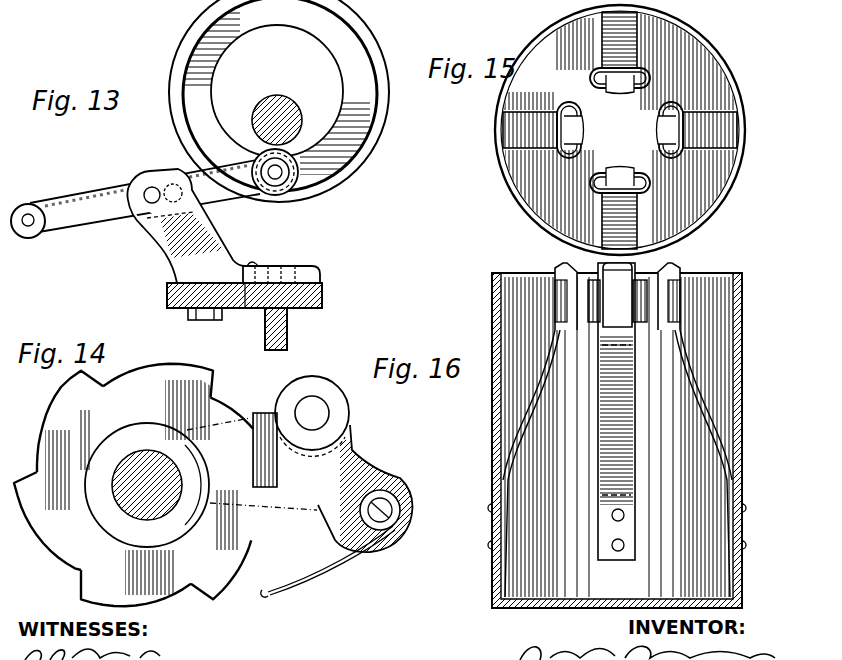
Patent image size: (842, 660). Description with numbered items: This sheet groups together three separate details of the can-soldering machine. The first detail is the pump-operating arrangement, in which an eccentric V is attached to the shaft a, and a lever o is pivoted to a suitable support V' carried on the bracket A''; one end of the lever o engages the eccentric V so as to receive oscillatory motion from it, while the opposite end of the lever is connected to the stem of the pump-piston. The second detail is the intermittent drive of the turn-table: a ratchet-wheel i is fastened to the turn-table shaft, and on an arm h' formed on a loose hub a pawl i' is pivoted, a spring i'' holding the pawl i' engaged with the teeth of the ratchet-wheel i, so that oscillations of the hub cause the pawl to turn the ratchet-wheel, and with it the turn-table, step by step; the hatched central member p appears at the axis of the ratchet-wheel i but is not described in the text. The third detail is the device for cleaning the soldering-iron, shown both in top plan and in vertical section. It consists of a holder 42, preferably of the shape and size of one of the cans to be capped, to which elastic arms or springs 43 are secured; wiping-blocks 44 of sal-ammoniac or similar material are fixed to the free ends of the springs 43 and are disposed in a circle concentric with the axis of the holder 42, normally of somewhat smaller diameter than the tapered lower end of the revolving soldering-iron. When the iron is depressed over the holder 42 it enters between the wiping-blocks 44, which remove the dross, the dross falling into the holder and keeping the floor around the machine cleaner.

In FIG. 13, the eccentric V is at (279, 101).
In FIG. 13, the shaft a is at (277, 120).
In FIG. 13, the lever o is at (154, 193).
In FIG. 13, the support V' is at (223, 226).
In FIG. 13, the bracket A'' is at (245, 316).
In FIG. 14, the ratchet-wheel i is at (133, 485).
In FIG. 14, the shaft p is at (147, 485).
In FIG. 14, the arm h' is at (303, 468).
In FIG. 14, the pawl i' is at (284, 526).
In FIG. 14, the spring i'' is at (328, 561).
In FIG. 15, the holder 42 is at (620, 130).
In FIG. 16, the holder 42 is at (617, 440).
In FIG. 15, the elastic arms or springs 43 is at (620, 130).
In FIG. 16, the elastic arms or springs 43 is at (700, 416).
In FIG. 15, the wiping-blocks 44 is at (618, 88).
In FIG. 16, the wiping-blocks 44 is at (556, 268).